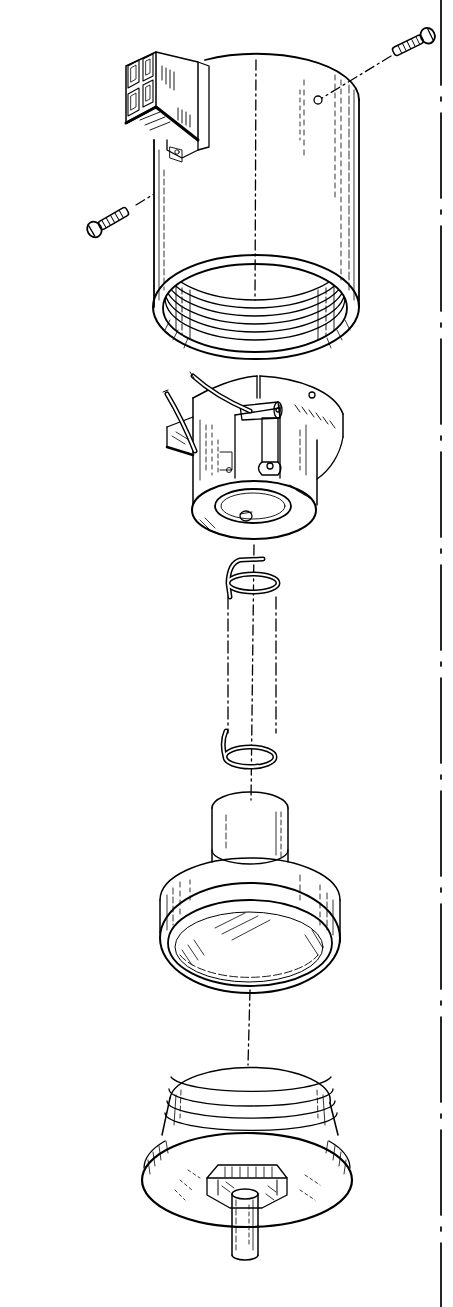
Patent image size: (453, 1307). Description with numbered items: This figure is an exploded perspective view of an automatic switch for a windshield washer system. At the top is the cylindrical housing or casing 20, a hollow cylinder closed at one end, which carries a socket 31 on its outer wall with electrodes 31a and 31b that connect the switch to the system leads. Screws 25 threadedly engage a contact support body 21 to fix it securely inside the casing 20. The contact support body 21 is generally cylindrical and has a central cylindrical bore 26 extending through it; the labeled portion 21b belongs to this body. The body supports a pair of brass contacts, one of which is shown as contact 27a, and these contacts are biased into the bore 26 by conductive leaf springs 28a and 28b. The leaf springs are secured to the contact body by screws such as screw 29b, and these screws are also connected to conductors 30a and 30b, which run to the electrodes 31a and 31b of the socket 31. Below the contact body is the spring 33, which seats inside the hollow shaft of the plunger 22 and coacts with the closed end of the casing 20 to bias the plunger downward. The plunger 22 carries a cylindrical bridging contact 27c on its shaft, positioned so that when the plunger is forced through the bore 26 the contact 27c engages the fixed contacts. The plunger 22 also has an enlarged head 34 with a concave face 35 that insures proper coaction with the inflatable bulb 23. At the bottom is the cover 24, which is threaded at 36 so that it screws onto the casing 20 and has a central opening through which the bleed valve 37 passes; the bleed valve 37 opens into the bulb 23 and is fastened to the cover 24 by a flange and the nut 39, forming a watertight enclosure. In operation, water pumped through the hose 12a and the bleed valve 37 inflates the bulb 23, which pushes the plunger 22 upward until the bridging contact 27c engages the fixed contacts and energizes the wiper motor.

The hose 12a is at (258, 1257).
The cylindrical housing 20 is at (362, 251).
The contact support body 21 is at (248, 461).
The hub portion 21b is at (310, 492).
The plunger 22 is at (286, 838).
The inflatable bulb 23 is at (274, 1102).
The cover 24 is at (352, 1170).
The screws 25 is at (428, 50).
The central cylindrical bore 26 is at (277, 513).
The contact 27a is at (268, 516).
The cylindrical bridging contact 27c is at (283, 853).
The leaf spring 28a is at (192, 486).
The leaf spring 28b is at (284, 446).
The screw 29b is at (267, 406).
The conductor 30a is at (163, 408).
The conductor 30b is at (192, 379).
The socket 31 is at (140, 89).
The electrode 31a is at (128, 116).
The electrode 31b is at (142, 122).
The spring 33 is at (277, 697).
The enlarged head 34 is at (338, 924).
The concave face 35 is at (313, 957).
The threads 36 is at (332, 1131).
The bleed valve 37 is at (260, 1197).
The nut 39 is at (213, 1207).